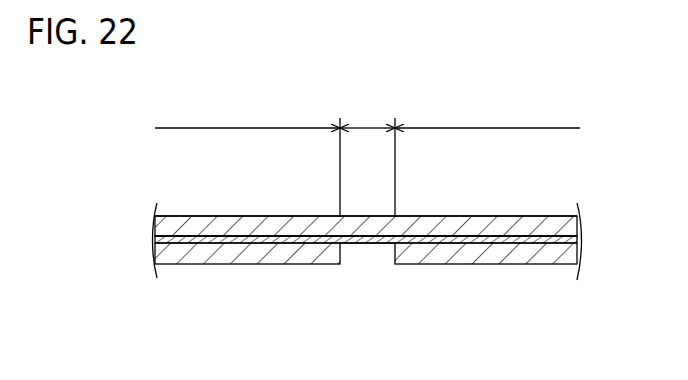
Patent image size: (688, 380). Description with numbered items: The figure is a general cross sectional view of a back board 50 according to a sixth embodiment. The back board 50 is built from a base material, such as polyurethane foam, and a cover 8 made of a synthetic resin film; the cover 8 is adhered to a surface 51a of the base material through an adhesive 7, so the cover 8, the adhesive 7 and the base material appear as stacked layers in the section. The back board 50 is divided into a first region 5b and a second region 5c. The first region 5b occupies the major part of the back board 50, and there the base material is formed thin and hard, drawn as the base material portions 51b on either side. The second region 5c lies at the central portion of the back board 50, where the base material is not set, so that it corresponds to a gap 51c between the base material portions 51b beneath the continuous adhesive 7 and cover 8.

The cover 8 is at (575, 226).
The adhesive 7 is at (578, 240).
The back board 50 is at (358, 204).
The surface of the base material 51a is at (480, 232).
The electrode portions 51b is at (268, 266).
The gap / slit between electrode portions 51c is at (368, 266).
The first region 5b is at (367, 114).
The second region 5c is at (367, 158).